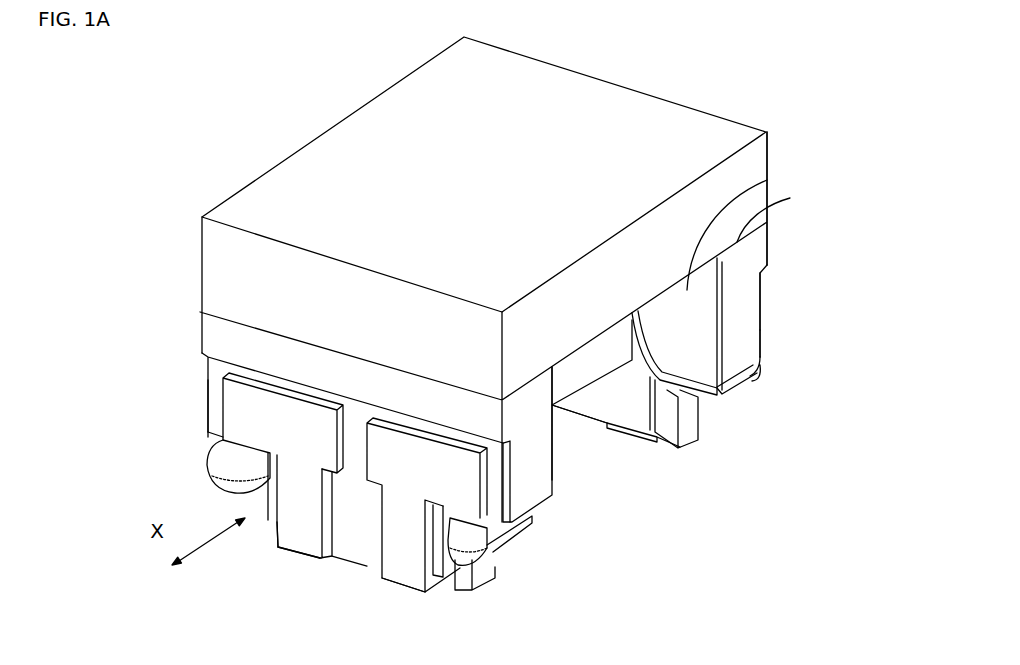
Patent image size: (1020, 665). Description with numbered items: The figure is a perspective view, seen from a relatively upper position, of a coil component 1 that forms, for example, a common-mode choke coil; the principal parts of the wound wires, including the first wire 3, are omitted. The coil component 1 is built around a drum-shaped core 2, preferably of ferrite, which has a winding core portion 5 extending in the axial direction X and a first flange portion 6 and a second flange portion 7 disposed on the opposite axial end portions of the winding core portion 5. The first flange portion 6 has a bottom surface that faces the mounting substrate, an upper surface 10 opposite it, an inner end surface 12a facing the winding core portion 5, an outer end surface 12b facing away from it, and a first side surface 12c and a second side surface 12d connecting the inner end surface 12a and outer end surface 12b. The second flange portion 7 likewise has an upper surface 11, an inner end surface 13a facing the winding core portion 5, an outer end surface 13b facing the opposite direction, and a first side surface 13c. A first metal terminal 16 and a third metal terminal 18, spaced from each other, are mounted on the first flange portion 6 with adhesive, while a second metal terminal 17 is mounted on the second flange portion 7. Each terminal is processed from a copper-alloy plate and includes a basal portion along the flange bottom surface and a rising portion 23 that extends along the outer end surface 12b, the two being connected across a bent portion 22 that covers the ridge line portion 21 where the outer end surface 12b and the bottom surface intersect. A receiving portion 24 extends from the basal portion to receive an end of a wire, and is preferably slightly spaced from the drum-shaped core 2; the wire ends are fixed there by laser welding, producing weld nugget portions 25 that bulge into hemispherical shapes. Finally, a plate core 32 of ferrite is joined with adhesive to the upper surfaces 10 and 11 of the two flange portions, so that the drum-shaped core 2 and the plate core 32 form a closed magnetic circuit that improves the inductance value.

The coil component 1 is at (262, 92).
The drum-shaped core 2 is at (779, 281).
The first wire 3 is at (650, 362).
The winding core portion 5 is at (577, 383).
The first flange portion 6 is at (201, 398).
The second flange portion 7 is at (777, 234).
The upper surface 10 is at (235, 318).
The upper surface 11 is at (790, 198).
The inner end surface 12a is at (552, 460).
The outer end surface 12b is at (348, 520).
The first side surface 12c is at (537, 493).
The second side surface 12d is at (208, 372).
The inner end surface 13a is at (767, 180).
The outer end surface 13b is at (762, 316).
The first side surface 13c is at (752, 338).
The first metal terminal 16 is at (391, 597).
The second metal terminal 17 is at (691, 457).
The third metal terminal 18 is at (275, 554).
The ridge line portion 21 is at (352, 545).
The bent portion 22 is at (290, 550).
The rising portion 23 is at (235, 412).
The receiving portion 24 is at (218, 453).
The weld nugget portion 25 is at (225, 488).
The plate core 32 is at (208, 232).